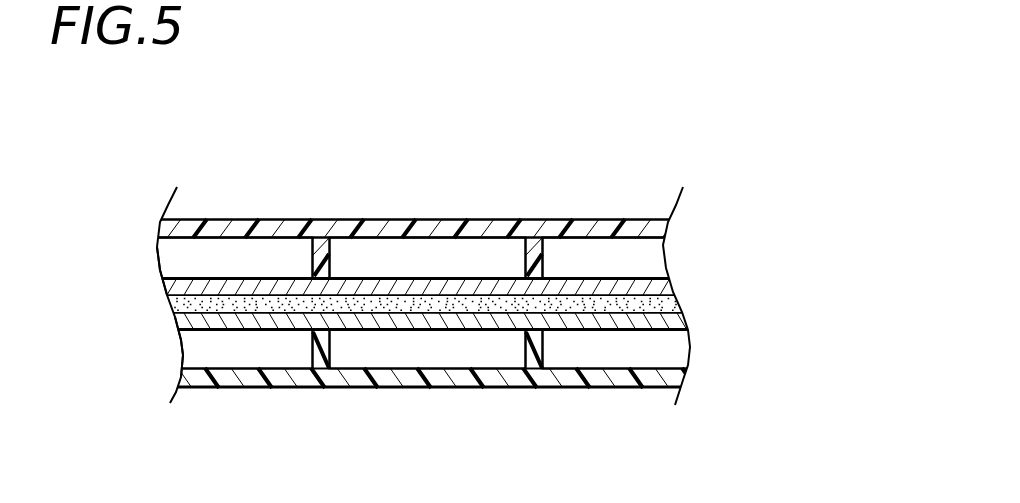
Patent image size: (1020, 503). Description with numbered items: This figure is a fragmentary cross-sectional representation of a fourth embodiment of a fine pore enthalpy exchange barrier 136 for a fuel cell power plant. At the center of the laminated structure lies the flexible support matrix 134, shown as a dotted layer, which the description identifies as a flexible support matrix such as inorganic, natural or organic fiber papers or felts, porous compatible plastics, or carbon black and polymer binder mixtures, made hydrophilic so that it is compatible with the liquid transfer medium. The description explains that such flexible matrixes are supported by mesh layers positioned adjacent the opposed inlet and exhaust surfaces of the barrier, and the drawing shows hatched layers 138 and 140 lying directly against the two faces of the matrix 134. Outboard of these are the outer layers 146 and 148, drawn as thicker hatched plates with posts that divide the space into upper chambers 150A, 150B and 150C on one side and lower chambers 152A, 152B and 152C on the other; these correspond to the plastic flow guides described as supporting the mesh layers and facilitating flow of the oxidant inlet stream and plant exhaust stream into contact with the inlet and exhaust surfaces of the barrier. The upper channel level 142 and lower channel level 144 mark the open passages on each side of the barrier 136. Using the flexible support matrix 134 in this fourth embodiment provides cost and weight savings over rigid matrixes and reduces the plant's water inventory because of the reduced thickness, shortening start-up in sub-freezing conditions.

The fine pore enthalpy exchange barrier 136 is at (751, 158).
The top cover layer 146 is at (490, 223).
The bottom cover layer 148 is at (488, 380).
The first electrode layer 138 is at (622, 283).
The second electrode layer 140 is at (637, 318).
The flexible support matrix 134 is at (180, 299).
The upper channel layer 142 is at (160, 265).
The lower channel layer 144 is at (181, 323).
The first upper chamber 150A is at (242, 230).
The second upper chamber 150B is at (386, 230).
The third upper chamber 150C is at (605, 226).
The first lower chamber 152A is at (248, 362).
The second lower chamber 152B is at (404, 362).
The third lower chamber 152C is at (607, 364).